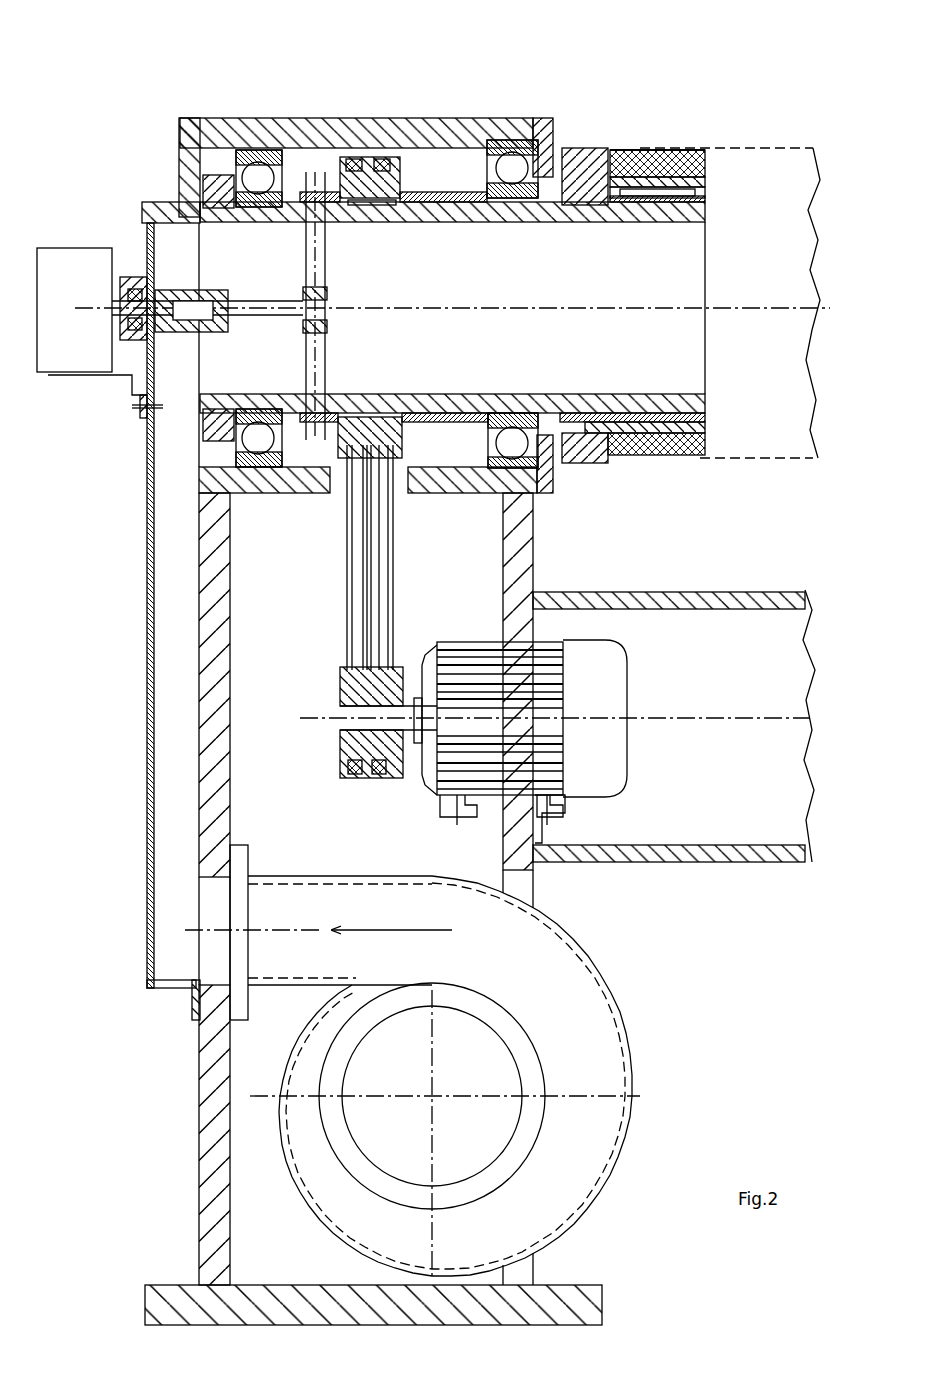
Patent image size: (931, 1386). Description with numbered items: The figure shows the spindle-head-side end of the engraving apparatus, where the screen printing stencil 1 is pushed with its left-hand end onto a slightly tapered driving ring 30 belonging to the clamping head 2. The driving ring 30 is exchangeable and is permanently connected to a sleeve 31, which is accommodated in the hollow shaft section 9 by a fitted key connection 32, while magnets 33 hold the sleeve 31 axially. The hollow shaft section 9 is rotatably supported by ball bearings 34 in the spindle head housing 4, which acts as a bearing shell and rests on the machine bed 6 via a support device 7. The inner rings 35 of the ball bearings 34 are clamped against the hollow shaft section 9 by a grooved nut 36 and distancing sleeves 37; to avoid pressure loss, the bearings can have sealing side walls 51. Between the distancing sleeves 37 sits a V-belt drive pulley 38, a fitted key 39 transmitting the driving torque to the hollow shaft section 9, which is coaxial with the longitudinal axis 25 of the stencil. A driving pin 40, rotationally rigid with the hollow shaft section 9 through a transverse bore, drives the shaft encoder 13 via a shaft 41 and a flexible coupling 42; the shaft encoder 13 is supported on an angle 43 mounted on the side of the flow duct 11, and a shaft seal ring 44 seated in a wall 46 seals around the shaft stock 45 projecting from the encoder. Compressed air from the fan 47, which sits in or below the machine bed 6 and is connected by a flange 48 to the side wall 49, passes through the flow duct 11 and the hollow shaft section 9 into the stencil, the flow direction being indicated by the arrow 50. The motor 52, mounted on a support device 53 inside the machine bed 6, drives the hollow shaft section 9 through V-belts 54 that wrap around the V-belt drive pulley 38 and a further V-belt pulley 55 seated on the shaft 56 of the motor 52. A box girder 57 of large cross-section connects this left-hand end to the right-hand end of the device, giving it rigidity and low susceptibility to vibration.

The screen printing stencil 1 is at (770, 148).
The clamping head 2 is at (602, 100).
The spindle head housing 4 is at (415, 122).
The machine bed 6 is at (727, 777).
The support device 7 is at (525, 565).
The hollow shaft section 9 is at (555, 183).
The flow duct 11 is at (148, 548).
The shaft encoder 13 is at (73, 260).
The longitudinal axis 25 is at (655, 306).
The driving ring 30 is at (670, 148).
The sleeve 31 is at (598, 148).
The fitted key connection 32 is at (652, 147).
The magnets 33 is at (577, 153).
The ball bearings 34 is at (257, 176).
The inner rings 35 is at (303, 197).
The grooved nut 36 is at (178, 160).
The distancing sleeves 37 is at (432, 190).
The V-belt drive pulley 38 is at (400, 204).
The fitted key 39 is at (363, 205).
The driving pin 40 is at (320, 264).
The shaft 41 is at (275, 305).
The flexible coupling 42 is at (172, 290).
The angle 43 is at (132, 380).
The shaft seal ring 44 is at (128, 346).
The shaft stock 45 is at (125, 277).
The wall 46 is at (131, 353).
The fan 47 is at (474, 1070).
The flange 48 is at (248, 858).
The side wall 49 is at (205, 1096).
The arrow 50 is at (398, 925).
The sealing side walls 51 is at (205, 178).
The motor 52 is at (547, 690).
The support device 53 is at (493, 812).
The V-belts 54 is at (355, 557).
The V-belt pulley 55 is at (345, 678).
The shaft 56 is at (352, 720).
The box girder 57 is at (650, 862).